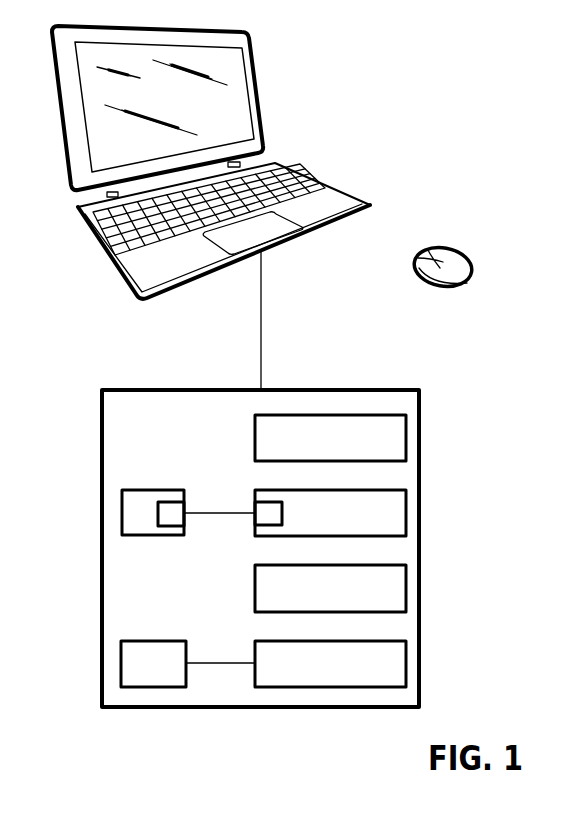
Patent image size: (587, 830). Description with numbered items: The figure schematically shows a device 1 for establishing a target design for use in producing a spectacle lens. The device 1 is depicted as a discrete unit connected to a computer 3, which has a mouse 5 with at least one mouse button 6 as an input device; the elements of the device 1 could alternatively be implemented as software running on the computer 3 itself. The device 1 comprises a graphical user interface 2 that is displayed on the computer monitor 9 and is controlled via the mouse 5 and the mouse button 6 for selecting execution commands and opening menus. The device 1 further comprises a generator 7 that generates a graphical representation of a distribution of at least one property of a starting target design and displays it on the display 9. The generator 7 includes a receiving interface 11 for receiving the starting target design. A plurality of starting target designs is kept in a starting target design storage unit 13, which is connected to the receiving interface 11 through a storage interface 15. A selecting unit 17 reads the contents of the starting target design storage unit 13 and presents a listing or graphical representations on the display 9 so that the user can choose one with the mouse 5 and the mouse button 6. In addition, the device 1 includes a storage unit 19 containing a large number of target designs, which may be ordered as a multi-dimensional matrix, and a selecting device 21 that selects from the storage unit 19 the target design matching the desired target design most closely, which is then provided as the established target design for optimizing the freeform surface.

The device for establishing a target design 1 is at (101, 440).
The graphical user interface 2 is at (406, 438).
The computer 3 is at (97, 238).
The mouse 5 is at (470, 258).
The mouse button 6 is at (420, 250).
The generator 7 is at (406, 512).
The computer monitor 9 is at (243, 103).
The receiving interface 11 is at (262, 508).
The starting target design storage unit 13 is at (122, 515).
The storage interface 15 is at (175, 537).
The selecting unit 17 is at (406, 588).
The storage unit 19 is at (121, 664).
The selecting device 21 is at (406, 663).